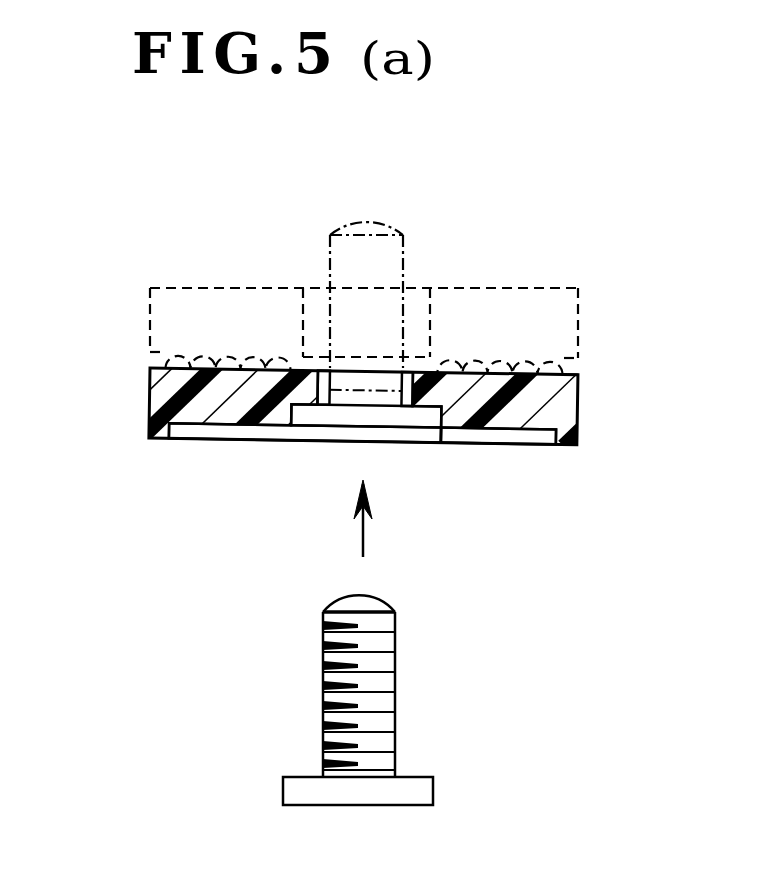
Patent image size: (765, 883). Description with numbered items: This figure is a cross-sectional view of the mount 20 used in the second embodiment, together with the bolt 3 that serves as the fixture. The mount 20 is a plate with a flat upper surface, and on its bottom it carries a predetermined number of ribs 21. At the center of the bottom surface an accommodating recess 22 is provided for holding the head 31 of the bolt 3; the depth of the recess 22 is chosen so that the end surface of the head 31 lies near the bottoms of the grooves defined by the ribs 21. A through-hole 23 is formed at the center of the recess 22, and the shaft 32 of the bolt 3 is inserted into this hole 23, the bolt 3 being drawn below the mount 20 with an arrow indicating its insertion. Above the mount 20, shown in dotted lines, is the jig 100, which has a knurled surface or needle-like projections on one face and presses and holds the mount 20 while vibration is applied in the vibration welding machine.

The jig 100 is at (153, 285).
The mount 20 is at (148, 405).
The ribs 21 is at (511, 441).
The accommodating recess 22 is at (297, 441).
The through-hole 23 is at (348, 357).
The bolt 3 is at (383, 218).
The head 31 is at (380, 795).
The shaft 32 is at (383, 662).